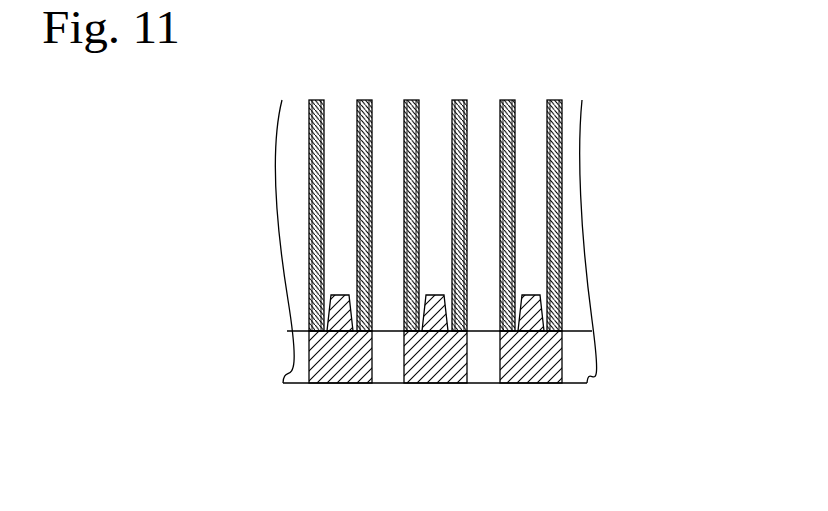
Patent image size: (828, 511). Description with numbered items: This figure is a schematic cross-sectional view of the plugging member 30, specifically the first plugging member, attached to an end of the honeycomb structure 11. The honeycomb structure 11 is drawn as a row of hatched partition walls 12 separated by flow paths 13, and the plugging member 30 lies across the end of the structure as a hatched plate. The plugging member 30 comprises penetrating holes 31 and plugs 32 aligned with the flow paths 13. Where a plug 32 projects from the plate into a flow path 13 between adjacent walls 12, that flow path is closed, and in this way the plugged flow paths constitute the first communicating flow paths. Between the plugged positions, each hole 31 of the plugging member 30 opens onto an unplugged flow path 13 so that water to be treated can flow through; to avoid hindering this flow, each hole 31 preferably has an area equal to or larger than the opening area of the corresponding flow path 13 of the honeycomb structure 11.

The honeycomb structure 11 is at (598, 328).
The first layer 12 is at (460, 112).
The flow path 13 is at (387, 117).
The plugging member 30 is at (596, 355).
The hole 31 is at (387, 367).
The plug 32 is at (340, 300).